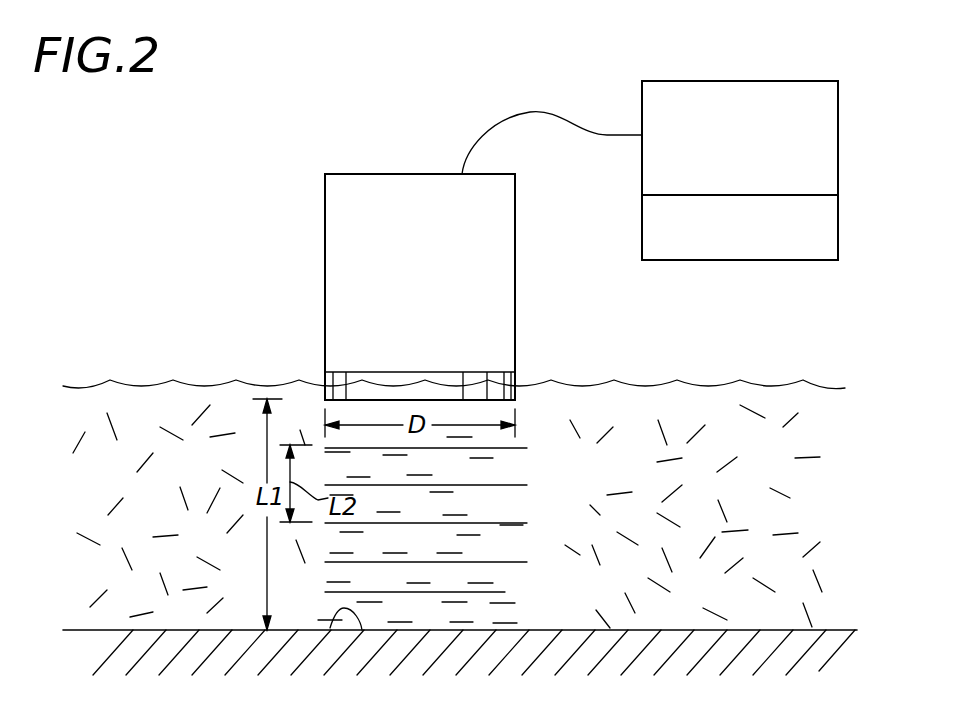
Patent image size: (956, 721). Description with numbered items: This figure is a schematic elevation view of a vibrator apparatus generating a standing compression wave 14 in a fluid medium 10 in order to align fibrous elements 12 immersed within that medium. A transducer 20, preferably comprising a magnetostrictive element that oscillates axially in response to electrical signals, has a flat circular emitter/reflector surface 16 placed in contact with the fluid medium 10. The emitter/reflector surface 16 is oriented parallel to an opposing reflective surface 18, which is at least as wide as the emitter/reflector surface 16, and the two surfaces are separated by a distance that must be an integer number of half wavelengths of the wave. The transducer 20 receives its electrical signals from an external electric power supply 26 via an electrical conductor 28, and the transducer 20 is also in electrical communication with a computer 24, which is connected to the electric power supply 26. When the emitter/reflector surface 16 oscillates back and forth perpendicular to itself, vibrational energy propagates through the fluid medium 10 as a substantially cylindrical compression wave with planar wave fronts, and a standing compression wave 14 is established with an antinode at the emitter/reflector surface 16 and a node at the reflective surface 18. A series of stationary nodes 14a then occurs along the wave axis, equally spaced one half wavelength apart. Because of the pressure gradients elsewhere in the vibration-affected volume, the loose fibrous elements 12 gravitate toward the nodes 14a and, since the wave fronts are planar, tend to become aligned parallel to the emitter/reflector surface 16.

The fluid medium 10 is at (140, 402).
The fibrous elements 12 is at (112, 507).
The standing compression wave 14 is at (526, 432).
The stationary nodes 14a is at (506, 449).
The emitter/reflector surface 16 is at (350, 400).
The reflective surface 18 is at (330, 628).
The transducer 20 is at (357, 316).
The computer 24 is at (725, 253).
The electric power supply 26 is at (738, 88).
The electrical conductor 28 is at (533, 112).